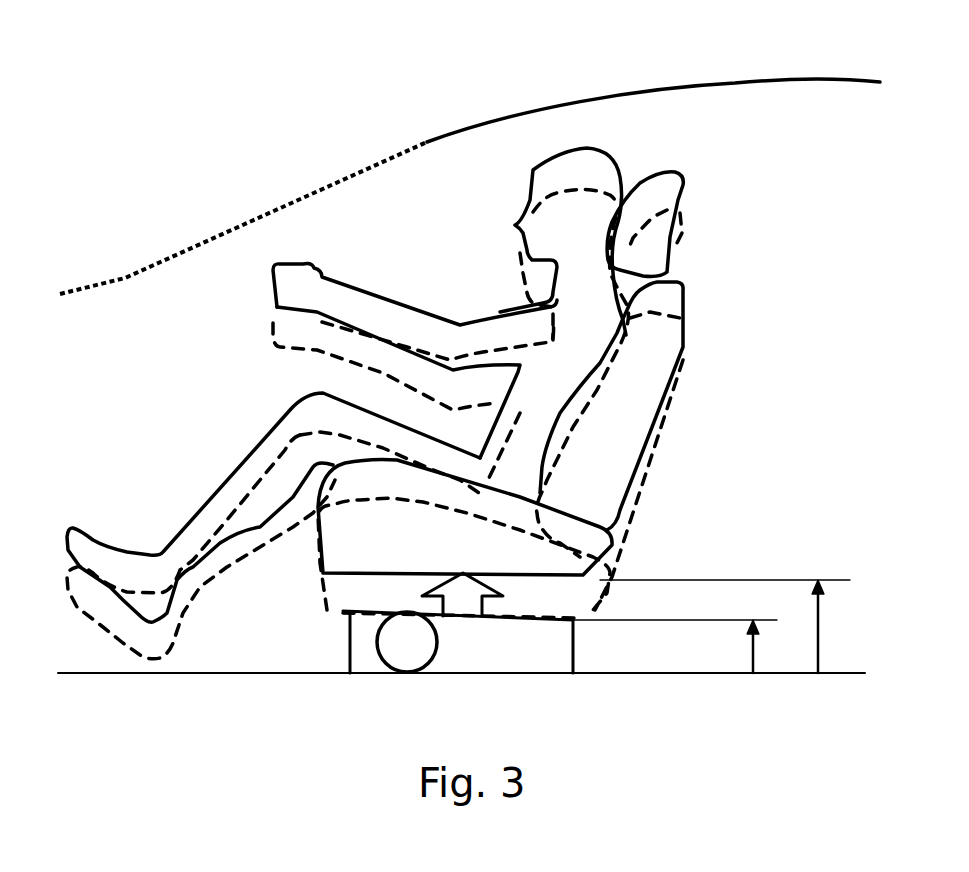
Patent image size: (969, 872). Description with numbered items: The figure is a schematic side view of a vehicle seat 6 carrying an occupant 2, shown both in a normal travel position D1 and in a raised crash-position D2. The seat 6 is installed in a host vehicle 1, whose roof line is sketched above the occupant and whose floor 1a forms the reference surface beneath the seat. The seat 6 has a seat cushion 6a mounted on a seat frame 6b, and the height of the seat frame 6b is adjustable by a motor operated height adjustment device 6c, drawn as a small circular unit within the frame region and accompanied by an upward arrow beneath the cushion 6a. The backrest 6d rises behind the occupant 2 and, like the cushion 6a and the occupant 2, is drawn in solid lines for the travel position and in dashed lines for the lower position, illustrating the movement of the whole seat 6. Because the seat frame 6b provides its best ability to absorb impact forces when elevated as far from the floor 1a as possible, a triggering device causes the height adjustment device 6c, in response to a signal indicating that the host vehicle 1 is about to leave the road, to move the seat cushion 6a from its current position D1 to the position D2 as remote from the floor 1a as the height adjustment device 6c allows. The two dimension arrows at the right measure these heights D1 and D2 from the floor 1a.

The host vehicle 1 is at (660, 80).
The floor 1a is at (210, 672).
The occupant 2 is at (581, 241).
The vehicle seat 6 is at (695, 298).
The seat cushion 6a is at (446, 551).
The seat frame 6b is at (573, 660).
The motor operated height adjustment device 6c is at (422, 655).
The seat backrest 6d is at (617, 475).
The normal travel position D1 is at (686, 646).
The raised crash-position D2 is at (729, 626).